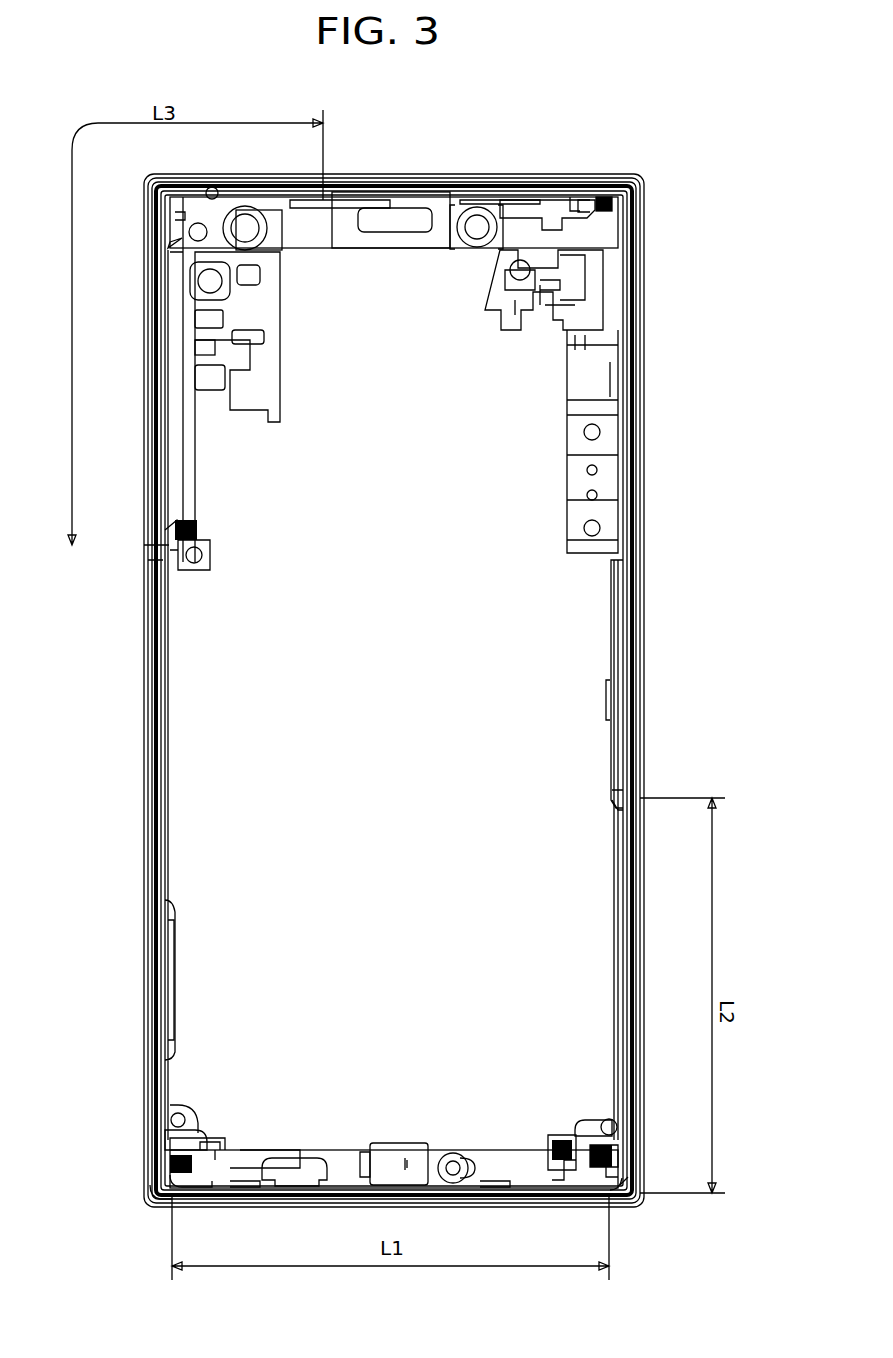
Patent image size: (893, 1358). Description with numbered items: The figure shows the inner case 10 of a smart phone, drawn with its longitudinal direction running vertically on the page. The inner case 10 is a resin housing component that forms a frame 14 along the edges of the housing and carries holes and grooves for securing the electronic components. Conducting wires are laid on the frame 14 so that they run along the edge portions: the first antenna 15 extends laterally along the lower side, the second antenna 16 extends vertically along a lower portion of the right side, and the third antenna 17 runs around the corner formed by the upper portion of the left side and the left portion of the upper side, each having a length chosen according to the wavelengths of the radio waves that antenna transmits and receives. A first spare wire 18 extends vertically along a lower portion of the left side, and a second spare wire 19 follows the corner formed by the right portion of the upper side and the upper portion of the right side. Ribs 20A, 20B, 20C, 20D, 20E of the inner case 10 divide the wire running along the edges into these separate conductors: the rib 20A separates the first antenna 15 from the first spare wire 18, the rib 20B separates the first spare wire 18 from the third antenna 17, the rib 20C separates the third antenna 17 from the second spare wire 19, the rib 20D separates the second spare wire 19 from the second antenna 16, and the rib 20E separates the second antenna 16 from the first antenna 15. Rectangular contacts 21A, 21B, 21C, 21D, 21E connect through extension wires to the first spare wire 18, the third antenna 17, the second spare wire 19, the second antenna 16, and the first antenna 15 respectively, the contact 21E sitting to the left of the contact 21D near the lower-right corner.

The inner case 10 is at (686, 219).
The frame 14 is at (176, 678).
The first antenna 15 is at (192, 1200).
The second antenna 16 is at (645, 940).
The third antenna 17 is at (165, 262).
The first spare wire 18 is at (144, 832).
The second spare wire 19 is at (650, 338).
The rib 20A is at (152, 1200).
The rib 20B is at (145, 564).
The rib 20C is at (335, 185).
The rib 20D is at (628, 786).
The rib 20E is at (617, 1212).
The contact 21A is at (195, 1120).
The contact 21B is at (204, 524).
The contact 21C is at (600, 190).
The contact 21D is at (590, 1128).
The contact 21E is at (555, 1135).